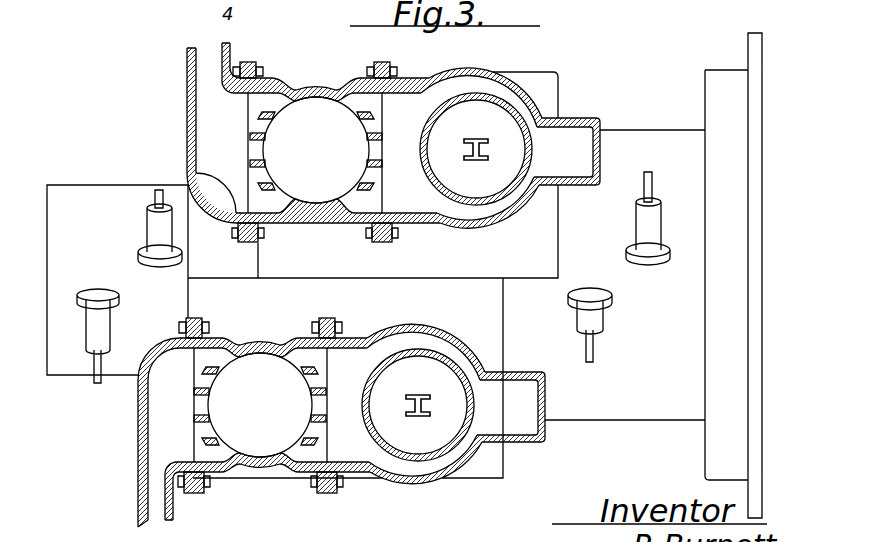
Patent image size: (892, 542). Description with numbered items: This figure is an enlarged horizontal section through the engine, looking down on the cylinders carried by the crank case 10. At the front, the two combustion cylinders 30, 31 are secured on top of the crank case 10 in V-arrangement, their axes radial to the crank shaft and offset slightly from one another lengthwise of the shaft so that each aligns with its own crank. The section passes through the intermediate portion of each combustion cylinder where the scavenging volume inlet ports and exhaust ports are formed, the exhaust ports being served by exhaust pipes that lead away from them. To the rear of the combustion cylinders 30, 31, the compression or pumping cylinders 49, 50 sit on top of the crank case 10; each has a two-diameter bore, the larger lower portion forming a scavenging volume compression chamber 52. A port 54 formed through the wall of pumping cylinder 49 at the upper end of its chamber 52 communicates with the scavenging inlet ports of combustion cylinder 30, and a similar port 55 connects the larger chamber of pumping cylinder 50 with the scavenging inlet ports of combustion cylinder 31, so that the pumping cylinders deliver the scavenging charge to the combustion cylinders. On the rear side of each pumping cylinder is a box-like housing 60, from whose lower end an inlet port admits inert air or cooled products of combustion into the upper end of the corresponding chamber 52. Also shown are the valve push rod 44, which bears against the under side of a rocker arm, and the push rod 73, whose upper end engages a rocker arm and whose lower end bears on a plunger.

The crank case 10 is at (622, 148).
The combustion cylinder 30 is at (318, 88).
The combustion cylinder 31 is at (256, 346).
The push rod 44 is at (155, 193).
The compression or pumping cylinder 49 is at (473, 72).
The compression or pumping cylinder 50 is at (440, 325).
The scavenging volume compression chamber 52 is at (522, 107).
The port 54 is at (441, 268).
The port 55 is at (344, 403).
The box-like housing 60 is at (602, 165).
The push rod 73 is at (652, 190).